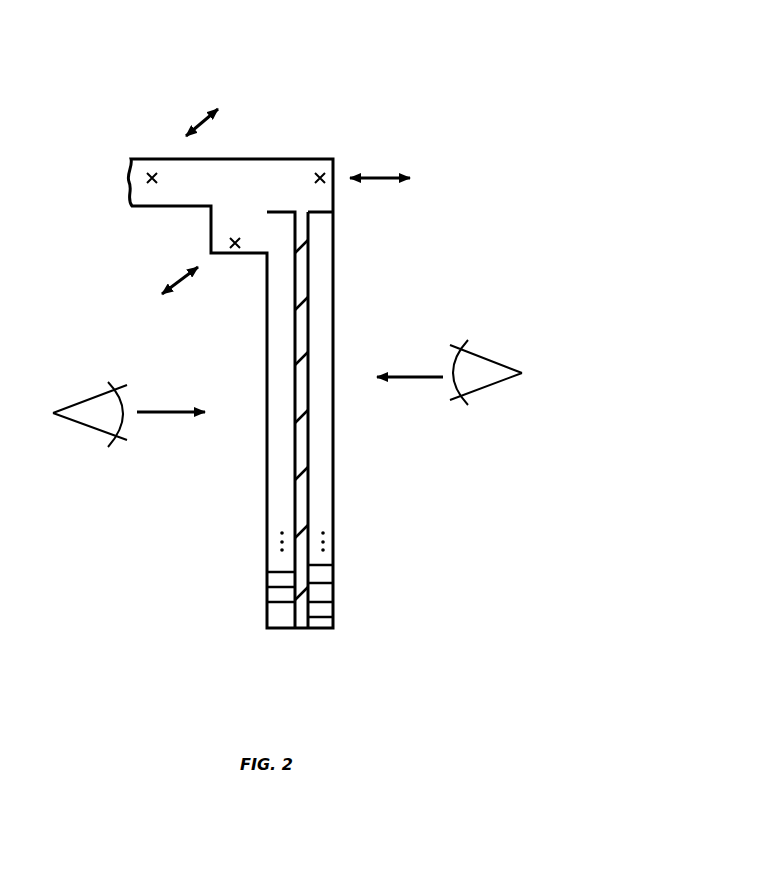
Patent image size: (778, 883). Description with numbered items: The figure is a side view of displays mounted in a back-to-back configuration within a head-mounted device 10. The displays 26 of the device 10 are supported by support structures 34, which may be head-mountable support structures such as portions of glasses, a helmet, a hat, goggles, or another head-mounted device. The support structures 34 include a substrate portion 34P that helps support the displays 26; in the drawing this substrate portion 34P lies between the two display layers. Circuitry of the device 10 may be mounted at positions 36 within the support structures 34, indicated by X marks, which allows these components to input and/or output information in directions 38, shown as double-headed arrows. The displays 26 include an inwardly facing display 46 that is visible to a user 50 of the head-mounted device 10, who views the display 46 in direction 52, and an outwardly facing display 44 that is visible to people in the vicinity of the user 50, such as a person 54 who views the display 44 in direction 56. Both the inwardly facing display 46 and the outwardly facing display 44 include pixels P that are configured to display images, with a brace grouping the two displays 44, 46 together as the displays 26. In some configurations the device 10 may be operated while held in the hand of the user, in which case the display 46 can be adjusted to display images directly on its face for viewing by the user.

The device 10 is at (382, 72).
The support structures 34 is at (243, 162).
The substrate portion 34P is at (303, 290).
The positions 36 is at (154, 173).
The directions 38 is at (204, 108).
The displays 26 is at (337, 653).
The outwardly facing display 44 is at (322, 634).
The inwardly facing display 46 is at (281, 634).
The pixels P is at (272, 615).
The user 50 is at (78, 452).
The direction 52 is at (167, 413).
The person 54 is at (505, 383).
The direction 56 is at (398, 377).